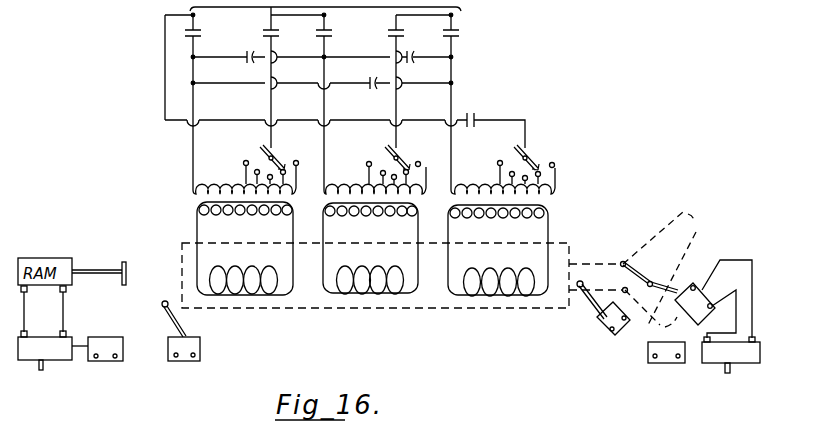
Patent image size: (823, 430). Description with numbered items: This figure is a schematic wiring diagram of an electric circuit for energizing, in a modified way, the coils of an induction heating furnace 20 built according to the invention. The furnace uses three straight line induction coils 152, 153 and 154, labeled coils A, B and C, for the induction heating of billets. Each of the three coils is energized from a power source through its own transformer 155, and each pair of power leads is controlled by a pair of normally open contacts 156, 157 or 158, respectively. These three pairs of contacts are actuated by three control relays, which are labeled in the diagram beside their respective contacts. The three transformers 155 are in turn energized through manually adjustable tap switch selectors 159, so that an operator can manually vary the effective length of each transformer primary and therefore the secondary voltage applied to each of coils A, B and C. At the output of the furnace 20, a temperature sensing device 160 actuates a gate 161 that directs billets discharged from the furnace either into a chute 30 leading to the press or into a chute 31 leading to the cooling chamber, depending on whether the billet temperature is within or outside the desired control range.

The furnace 20 is at (298, 317).
The chute 30 is at (692, 233).
The chute 31 is at (642, 333).
The induction coil 152 is at (212, 252).
The induction coil 153 is at (344, 256).
The induction coil 154 is at (534, 250).
The transformer 155 is at (181, 198).
The normally open contacts 156 is at (263, 24).
The normally open contacts 157 is at (394, 24).
The normally open contacts 158 is at (469, 112).
The tap switch selector 159 is at (254, 146).
The temperature sensing device 160 is at (595, 322).
The gate 161 is at (667, 282).